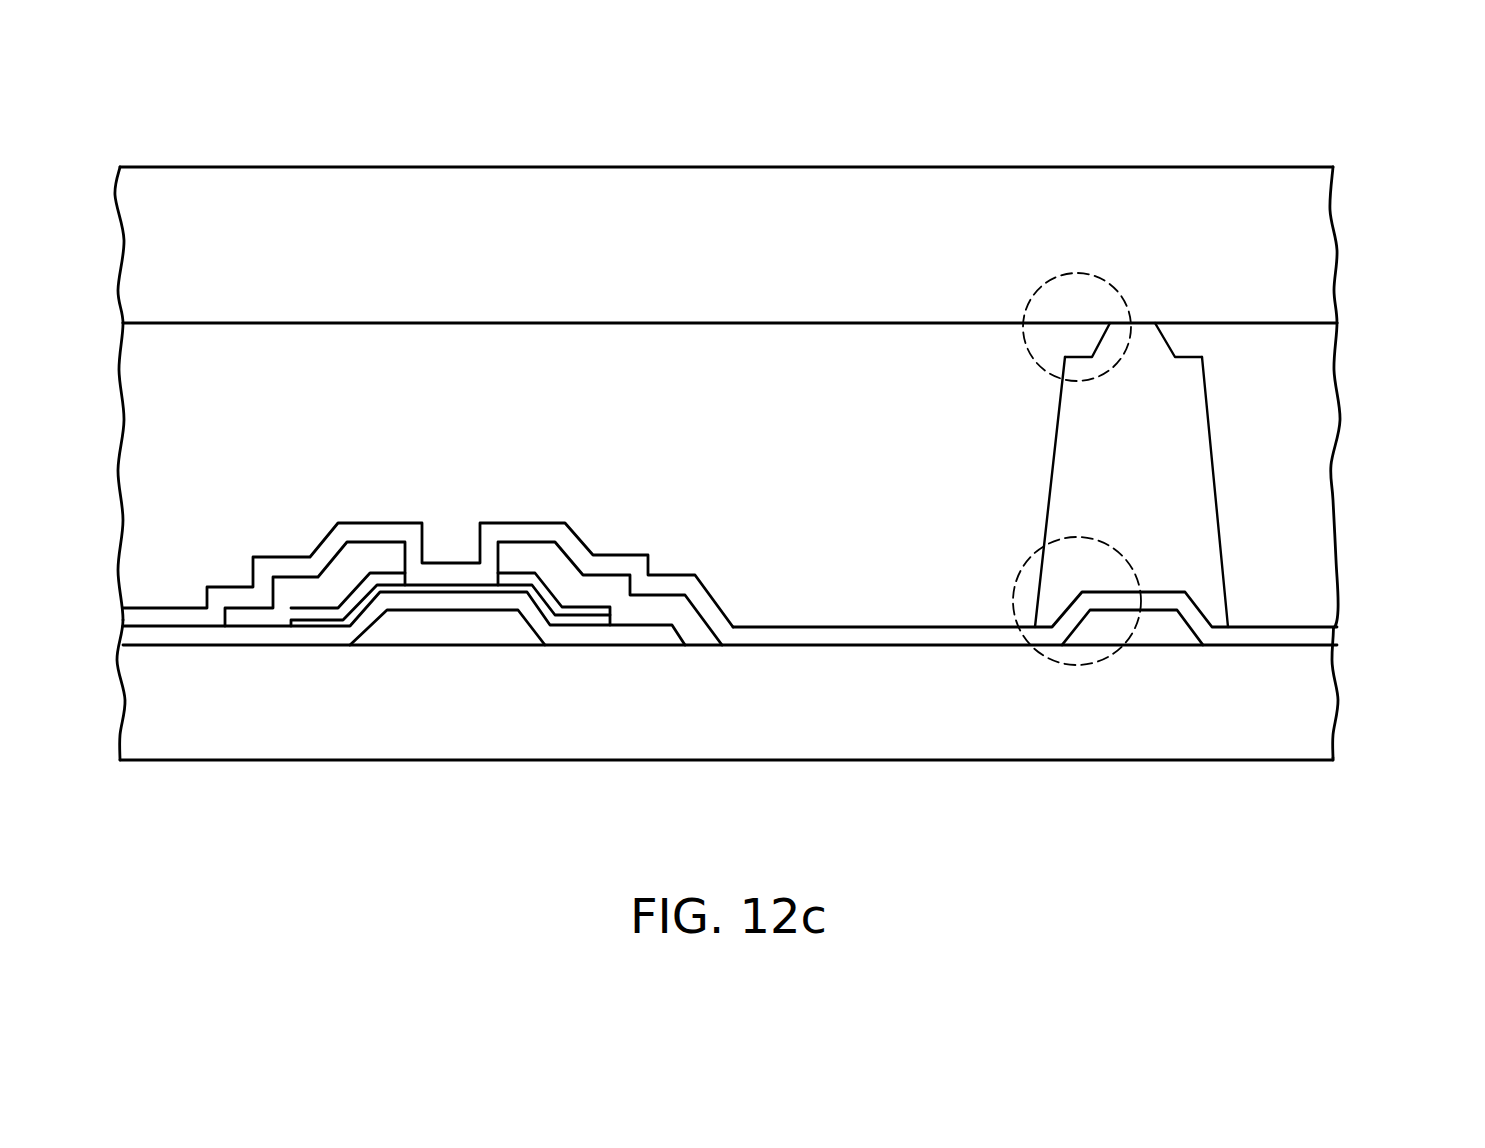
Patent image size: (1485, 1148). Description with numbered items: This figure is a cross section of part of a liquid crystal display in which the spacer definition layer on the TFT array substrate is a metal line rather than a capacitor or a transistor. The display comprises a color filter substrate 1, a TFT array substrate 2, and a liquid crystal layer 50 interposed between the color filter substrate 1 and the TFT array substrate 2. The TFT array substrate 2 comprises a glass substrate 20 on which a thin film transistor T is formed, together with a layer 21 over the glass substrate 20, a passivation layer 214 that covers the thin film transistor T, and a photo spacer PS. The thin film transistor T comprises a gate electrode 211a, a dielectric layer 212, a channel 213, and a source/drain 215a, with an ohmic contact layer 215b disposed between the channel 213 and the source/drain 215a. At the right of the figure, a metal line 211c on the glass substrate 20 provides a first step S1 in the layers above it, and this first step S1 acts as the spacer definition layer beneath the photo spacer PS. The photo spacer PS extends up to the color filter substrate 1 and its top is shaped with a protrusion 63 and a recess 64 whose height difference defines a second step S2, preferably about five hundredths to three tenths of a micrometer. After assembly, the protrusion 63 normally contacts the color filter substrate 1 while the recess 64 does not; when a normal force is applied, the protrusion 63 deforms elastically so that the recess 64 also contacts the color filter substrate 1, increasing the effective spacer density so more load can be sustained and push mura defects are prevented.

The color filter substrate 1 is at (1419, 165).
The TFT array substrate 2 is at (1419, 592).
The glass substrate 20 is at (1308, 727).
The passivation layer 21 is at (1308, 632).
The liquid crystal layer 50 is at (1308, 495).
The photo spacer PS is at (1227, 351).
The protrusion 63 is at (1138, 323).
The recess 64 is at (1190, 357).
The first step S1 is at (1072, 667).
The second step S2 is at (1082, 273).
The thin film transistor T is at (473, 704).
The gate electrode 211a is at (414, 624).
The metal line 211c is at (1162, 627).
The dielectric layer 212 is at (195, 632).
The channel 213 is at (596, 620).
The passivation layer 214 is at (150, 617).
The source/drain 215a is at (552, 560).
The ohmic contact layer 215b is at (575, 608).